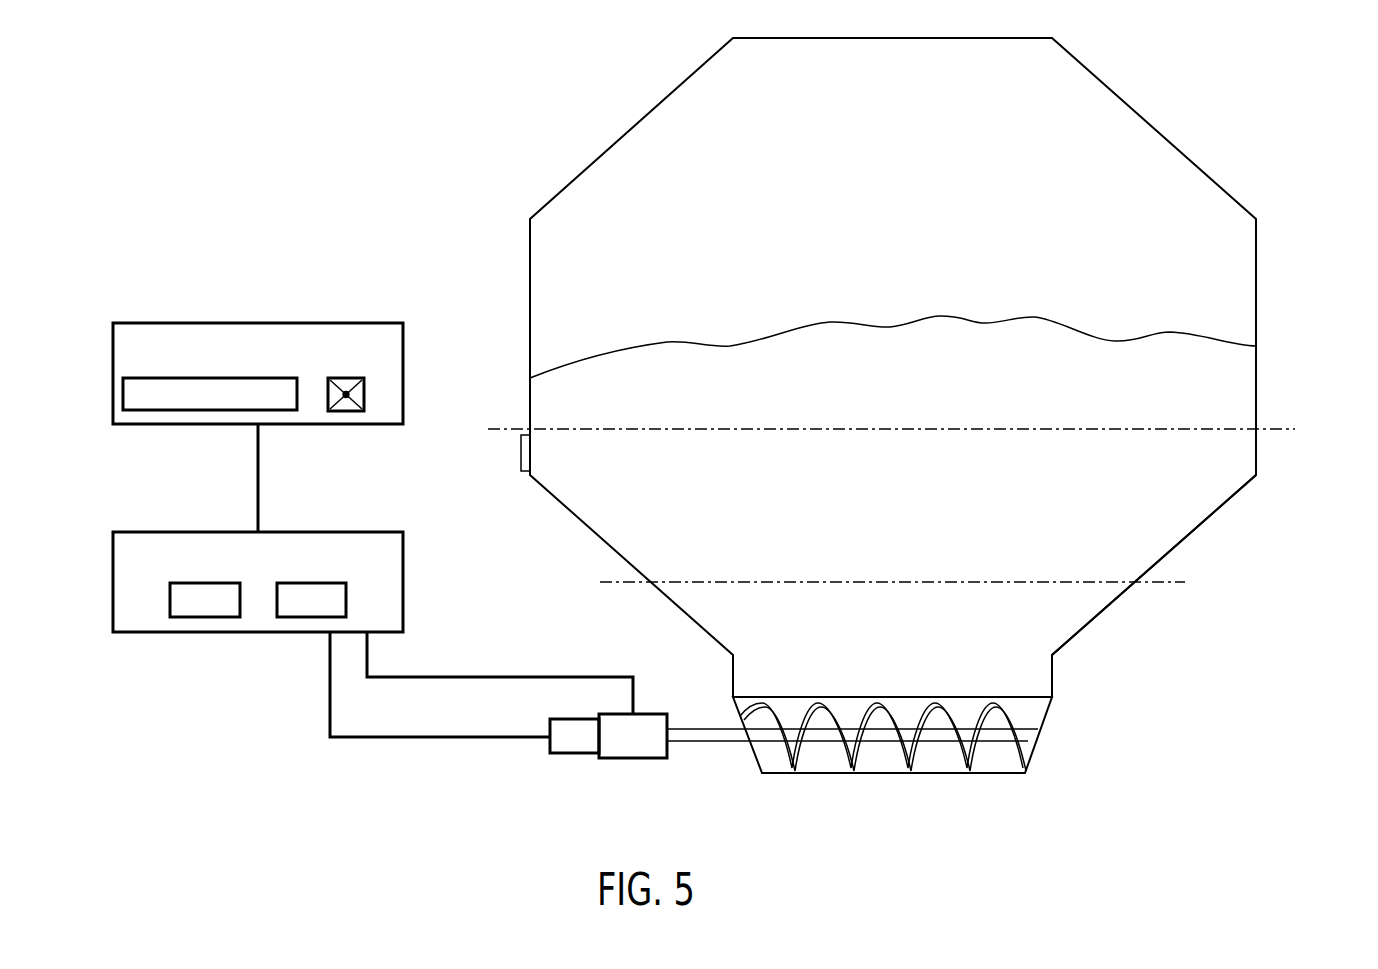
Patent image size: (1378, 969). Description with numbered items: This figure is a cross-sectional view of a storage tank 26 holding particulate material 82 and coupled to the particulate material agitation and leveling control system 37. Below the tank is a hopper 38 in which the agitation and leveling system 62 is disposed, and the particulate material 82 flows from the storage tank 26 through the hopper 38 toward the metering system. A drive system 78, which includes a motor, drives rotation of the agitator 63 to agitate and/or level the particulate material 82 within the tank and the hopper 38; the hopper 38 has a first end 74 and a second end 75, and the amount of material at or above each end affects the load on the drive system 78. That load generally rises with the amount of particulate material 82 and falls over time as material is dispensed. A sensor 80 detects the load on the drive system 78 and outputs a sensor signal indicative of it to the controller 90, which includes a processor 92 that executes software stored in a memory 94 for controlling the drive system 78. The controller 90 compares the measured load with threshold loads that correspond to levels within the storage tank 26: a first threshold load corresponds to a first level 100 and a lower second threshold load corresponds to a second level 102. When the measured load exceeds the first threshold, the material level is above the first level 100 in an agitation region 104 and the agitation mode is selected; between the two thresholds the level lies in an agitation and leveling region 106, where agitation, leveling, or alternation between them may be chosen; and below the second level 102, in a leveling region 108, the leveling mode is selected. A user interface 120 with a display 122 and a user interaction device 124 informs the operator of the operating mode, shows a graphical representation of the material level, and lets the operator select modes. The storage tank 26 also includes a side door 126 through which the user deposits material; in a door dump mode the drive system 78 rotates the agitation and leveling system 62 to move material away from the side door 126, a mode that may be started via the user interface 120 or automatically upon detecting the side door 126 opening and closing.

The storage tank 26 is at (1178, 151).
The particulate material agitation and leveling control system 37 is at (440, 813).
The hopper 38 is at (1046, 717).
The agitation and leveling system 62 is at (859, 794).
The agitator 63 is at (886, 743).
The first end 74 is at (1027, 790).
The second end 75 is at (760, 789).
The drive system 78 is at (632, 760).
The sensor 80 is at (575, 755).
The particulate material 82 is at (1165, 330).
The controller 90 is at (373, 580).
The processor 92 is at (205, 618).
The memory 94 is at (312, 618).
The first level 100 is at (1276, 431).
The second level 102 is at (1165, 584).
The agitation region 104 is at (1280, 388).
The agitation and leveling region 106 is at (1237, 528).
The leveling region 108 is at (1133, 658).
The user interface 120 is at (258, 356).
The display 122 is at (113, 394).
The user interaction device 124 is at (365, 393).
The side door 126 is at (521, 452).